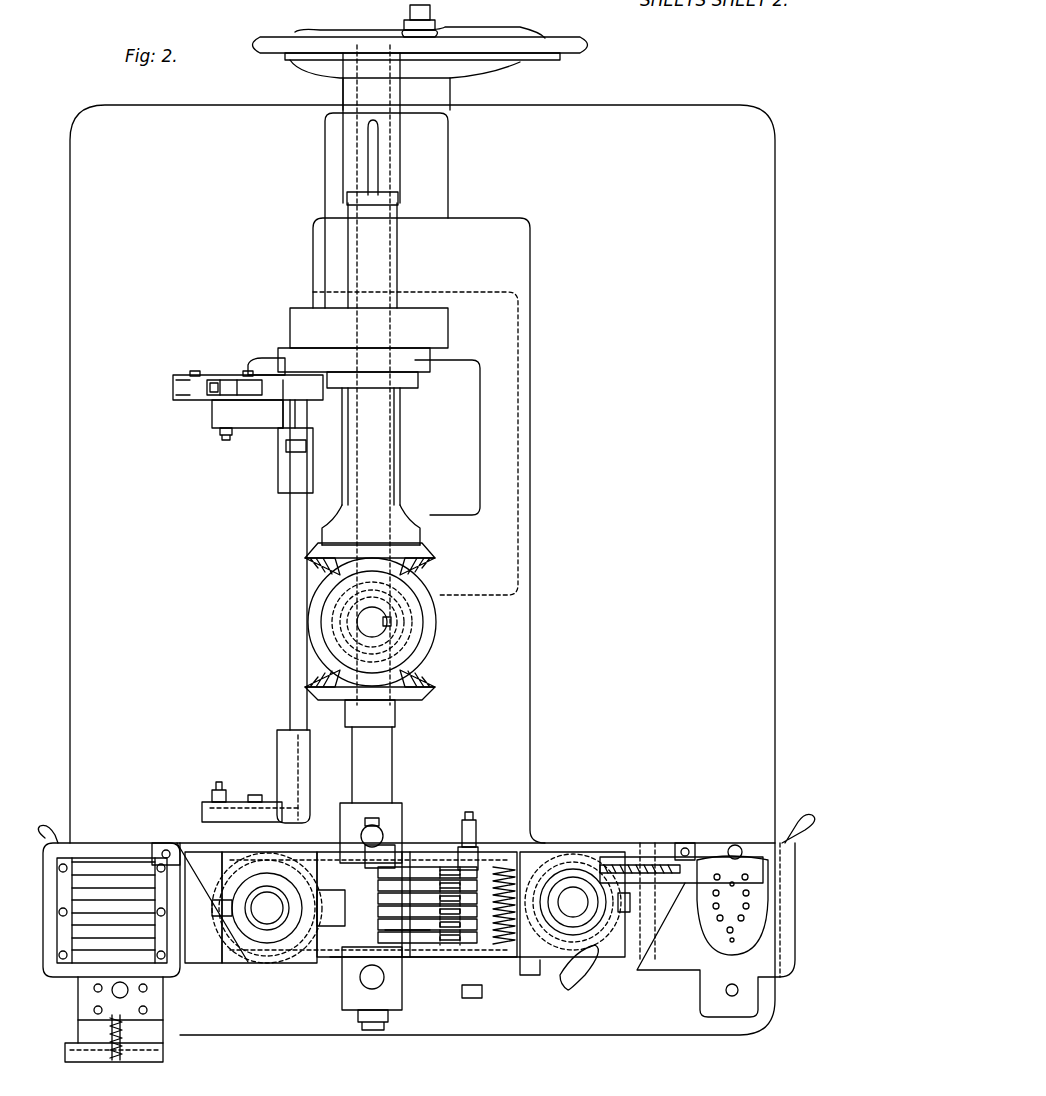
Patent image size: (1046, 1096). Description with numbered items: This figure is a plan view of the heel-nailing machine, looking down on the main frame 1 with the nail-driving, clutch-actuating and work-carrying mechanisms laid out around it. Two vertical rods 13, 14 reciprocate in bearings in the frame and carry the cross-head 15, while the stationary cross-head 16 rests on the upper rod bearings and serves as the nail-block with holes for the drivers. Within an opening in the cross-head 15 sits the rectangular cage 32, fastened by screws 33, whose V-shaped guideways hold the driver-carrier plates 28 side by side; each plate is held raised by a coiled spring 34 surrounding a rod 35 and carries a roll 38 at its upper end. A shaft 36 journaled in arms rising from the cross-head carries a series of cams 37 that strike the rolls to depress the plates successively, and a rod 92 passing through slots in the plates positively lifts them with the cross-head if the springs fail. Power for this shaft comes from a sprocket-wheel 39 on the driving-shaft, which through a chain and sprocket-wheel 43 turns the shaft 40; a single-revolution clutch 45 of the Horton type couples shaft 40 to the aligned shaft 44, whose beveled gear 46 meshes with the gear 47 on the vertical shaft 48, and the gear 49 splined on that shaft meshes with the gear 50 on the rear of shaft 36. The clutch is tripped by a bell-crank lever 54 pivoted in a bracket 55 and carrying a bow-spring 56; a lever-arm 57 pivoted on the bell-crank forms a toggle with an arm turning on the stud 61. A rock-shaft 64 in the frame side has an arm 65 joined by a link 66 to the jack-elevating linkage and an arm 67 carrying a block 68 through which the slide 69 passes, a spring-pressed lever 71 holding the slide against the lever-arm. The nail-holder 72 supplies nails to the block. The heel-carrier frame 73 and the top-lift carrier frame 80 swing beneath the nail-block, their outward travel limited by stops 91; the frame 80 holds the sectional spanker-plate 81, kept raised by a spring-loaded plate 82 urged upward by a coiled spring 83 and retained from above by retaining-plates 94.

The main frame 1 is at (790, 622).
The vertical rod 13 is at (575, 904).
The vertical rod 14 is at (267, 908).
The cross-head 15 is at (420, 830).
The stationary cross-head 16 is at (300, 965).
The plate 28 is at (452, 935).
The rectangular frame or cage 32 is at (385, 850).
The screws 33 is at (350, 820).
The coiled spring 34 is at (520, 875).
The rod 35 is at (555, 969).
The shaft 36 is at (388, 763).
The cams 37 is at (340, 945).
The roll 38 is at (435, 862).
The sprocket-wheel 39 is at (585, 45).
The shaft 40 is at (390, 175).
The sprocket-wheel 43 is at (437, 38).
The shaft 44 is at (386, 475).
The single-revolution clutch 45 is at (448, 325).
The beveled gear 46 is at (430, 556).
The beveled gear 47 is at (415, 505).
The vertical shaft 48 is at (372, 622).
The beveled gear 49 is at (430, 640).
The beveled gear 50 is at (435, 688).
The bell-crank lever 54 is at (183, 375).
The bracket 55 is at (325, 448).
The bow-spring 56 is at (268, 357).
The lever-arm 57 is at (262, 370).
The stud 61 is at (290, 448).
The rock-shaft 64 is at (290, 577).
The arm 65 is at (203, 820).
The link 66 is at (215, 800).
The arm 67 is at (256, 420).
The block 68 is at (228, 378).
The slide 69 is at (214, 392).
The spring-pressed lever 71 is at (175, 384).
The nail-holder 72 is at (648, 862).
The frame 73 is at (790, 840).
The frame 80 is at (183, 955).
The spanker-plate 81 is at (100, 870).
The plate or frame 82 is at (63, 977).
The coiled spring 83 is at (116, 1060).
The stops 91 is at (160, 848).
The rod 92 is at (418, 945).
The retaining-plates 94 is at (55, 890).